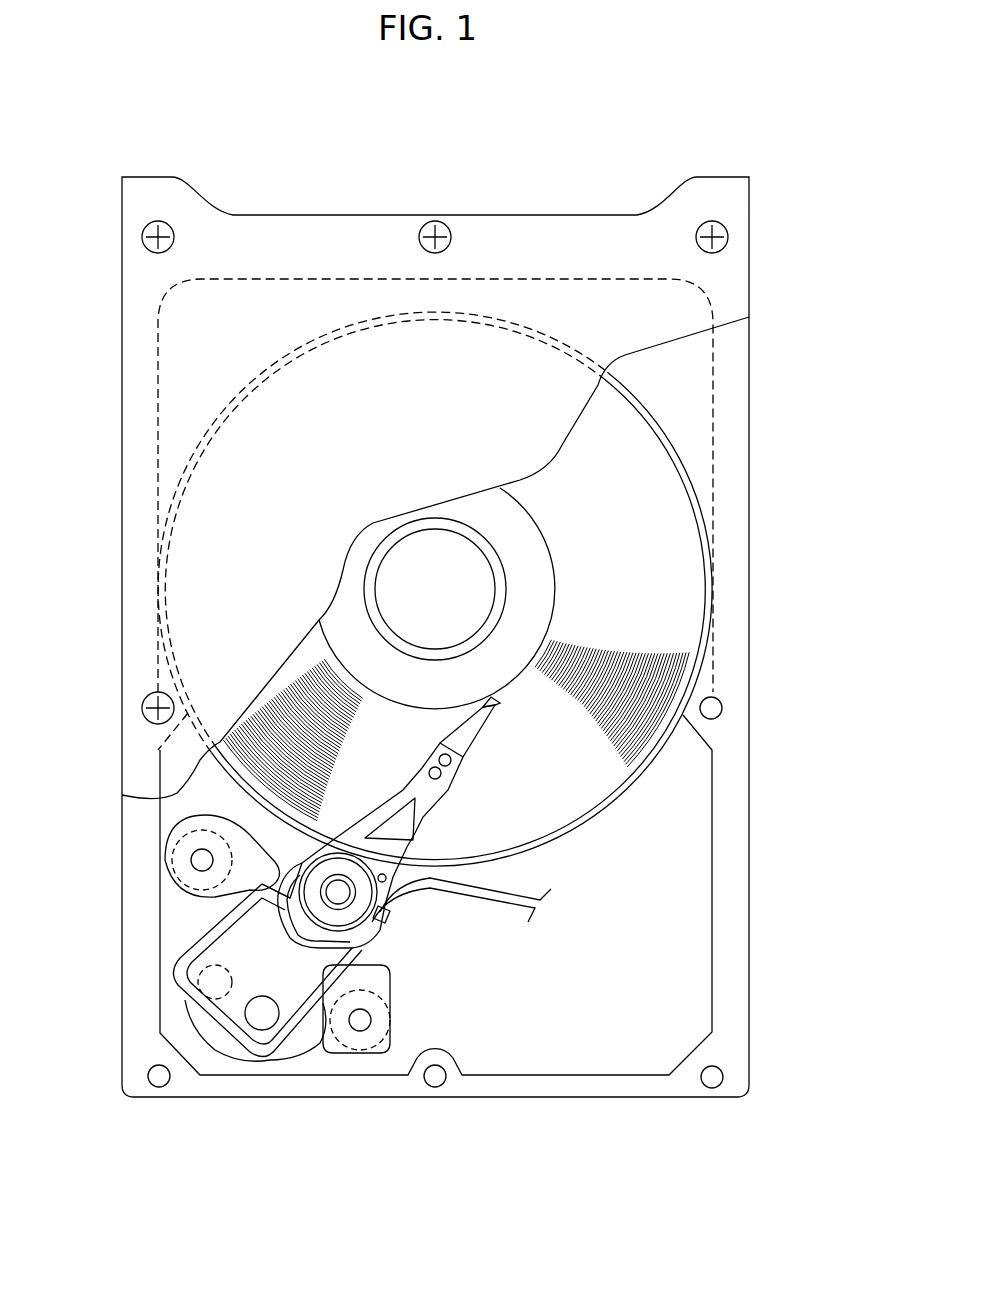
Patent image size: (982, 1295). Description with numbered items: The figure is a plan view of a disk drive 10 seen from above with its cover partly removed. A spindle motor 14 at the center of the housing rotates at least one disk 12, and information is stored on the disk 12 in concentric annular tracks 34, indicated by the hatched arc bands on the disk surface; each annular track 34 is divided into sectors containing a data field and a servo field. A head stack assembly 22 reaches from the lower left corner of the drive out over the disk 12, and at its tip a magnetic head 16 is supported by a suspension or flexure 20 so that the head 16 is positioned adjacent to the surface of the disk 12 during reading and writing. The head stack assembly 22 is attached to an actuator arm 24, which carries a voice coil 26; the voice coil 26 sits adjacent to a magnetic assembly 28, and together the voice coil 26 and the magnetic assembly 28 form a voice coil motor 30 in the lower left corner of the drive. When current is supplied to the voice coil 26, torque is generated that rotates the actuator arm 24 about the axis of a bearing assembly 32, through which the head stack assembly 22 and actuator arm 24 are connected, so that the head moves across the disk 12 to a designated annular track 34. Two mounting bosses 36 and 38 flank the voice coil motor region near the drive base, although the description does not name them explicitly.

The disk drive 10 is at (560, 157).
The disk 12 is at (668, 532).
The spindle motor 14 is at (413, 565).
The magnetic head 16 is at (496, 707).
The suspension or flexure 20 is at (478, 723).
The head stack assembly 22 is at (433, 815).
The actuator arm 24 is at (253, 908).
The voice coil 26 is at (192, 973).
The magnetic assembly 28 is at (203, 923).
The voice coil motor 30 is at (312, 1038).
The bearing assembly 32 is at (350, 903).
The annular tracks 34 is at (303, 700).
The outer stopper 36 is at (386, 1021).
The inner stopper 38 is at (180, 850).